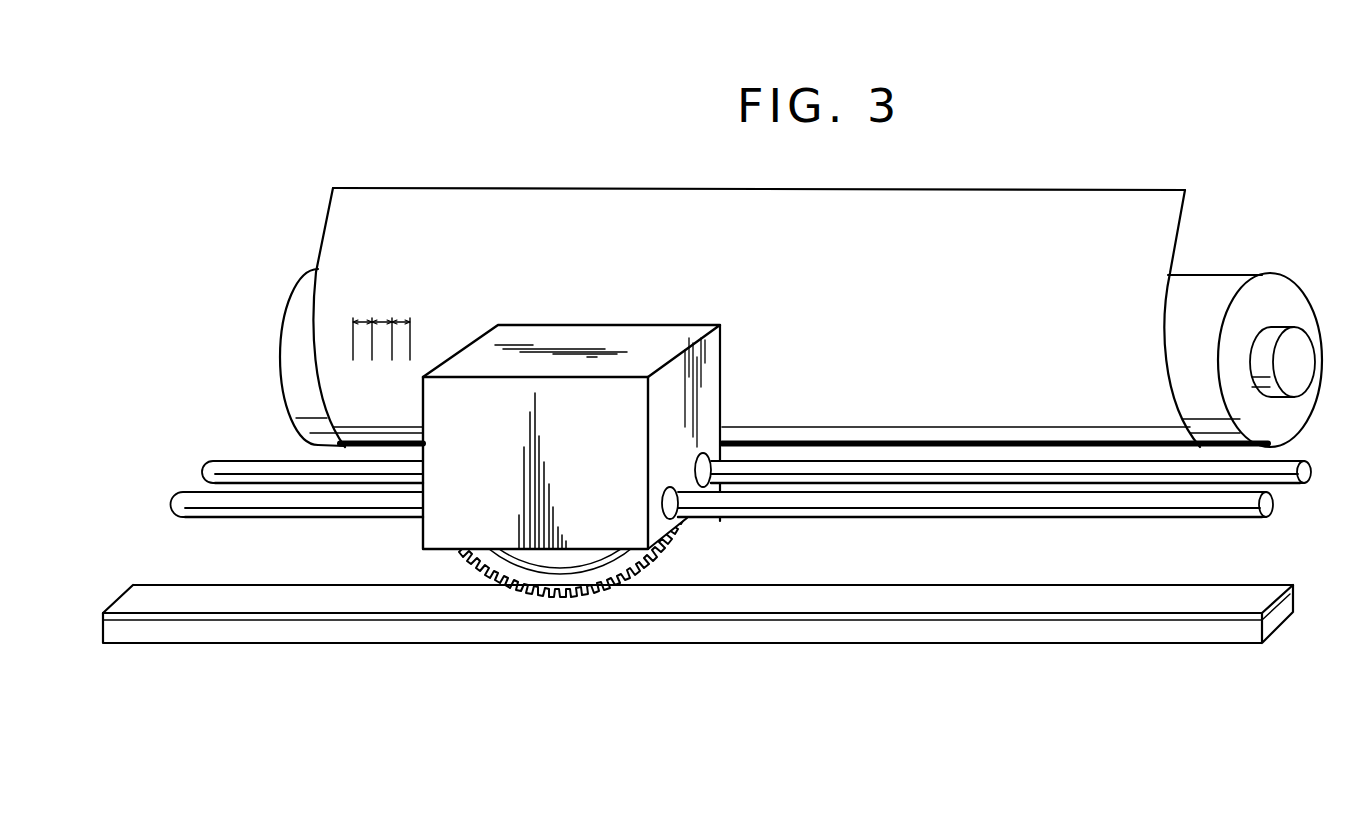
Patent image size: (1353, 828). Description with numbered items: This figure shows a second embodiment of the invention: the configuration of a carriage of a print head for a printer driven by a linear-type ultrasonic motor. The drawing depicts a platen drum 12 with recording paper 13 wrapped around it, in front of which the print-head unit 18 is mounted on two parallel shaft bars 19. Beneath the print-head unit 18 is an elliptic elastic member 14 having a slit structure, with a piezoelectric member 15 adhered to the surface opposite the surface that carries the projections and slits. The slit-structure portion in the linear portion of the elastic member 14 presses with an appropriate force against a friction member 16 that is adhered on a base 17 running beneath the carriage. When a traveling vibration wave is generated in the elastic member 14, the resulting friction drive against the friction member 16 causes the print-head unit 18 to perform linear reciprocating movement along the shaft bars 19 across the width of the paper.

The platen drum 12 is at (1272, 295).
The recording paper 13 is at (1155, 248).
The elliptic elastic member 14 is at (678, 532).
The piezoelectric member 15 is at (543, 557).
The friction member 16 is at (848, 595).
The base 17 is at (757, 640).
The print-head unit 18 is at (712, 400).
The shaft bars 19 is at (1121, 502).